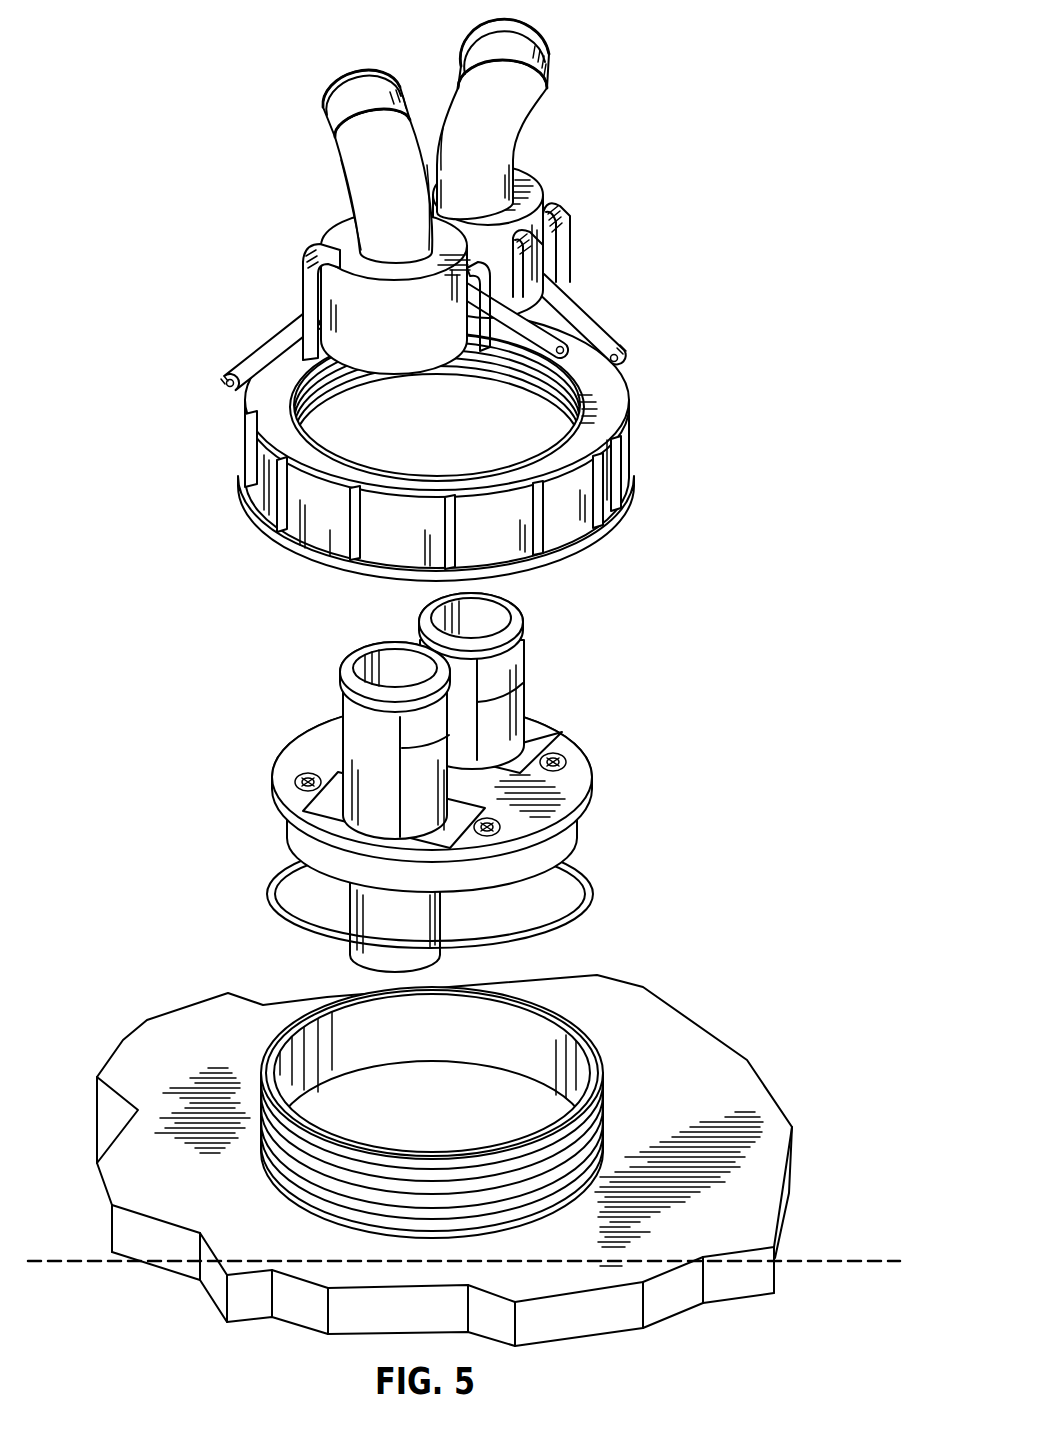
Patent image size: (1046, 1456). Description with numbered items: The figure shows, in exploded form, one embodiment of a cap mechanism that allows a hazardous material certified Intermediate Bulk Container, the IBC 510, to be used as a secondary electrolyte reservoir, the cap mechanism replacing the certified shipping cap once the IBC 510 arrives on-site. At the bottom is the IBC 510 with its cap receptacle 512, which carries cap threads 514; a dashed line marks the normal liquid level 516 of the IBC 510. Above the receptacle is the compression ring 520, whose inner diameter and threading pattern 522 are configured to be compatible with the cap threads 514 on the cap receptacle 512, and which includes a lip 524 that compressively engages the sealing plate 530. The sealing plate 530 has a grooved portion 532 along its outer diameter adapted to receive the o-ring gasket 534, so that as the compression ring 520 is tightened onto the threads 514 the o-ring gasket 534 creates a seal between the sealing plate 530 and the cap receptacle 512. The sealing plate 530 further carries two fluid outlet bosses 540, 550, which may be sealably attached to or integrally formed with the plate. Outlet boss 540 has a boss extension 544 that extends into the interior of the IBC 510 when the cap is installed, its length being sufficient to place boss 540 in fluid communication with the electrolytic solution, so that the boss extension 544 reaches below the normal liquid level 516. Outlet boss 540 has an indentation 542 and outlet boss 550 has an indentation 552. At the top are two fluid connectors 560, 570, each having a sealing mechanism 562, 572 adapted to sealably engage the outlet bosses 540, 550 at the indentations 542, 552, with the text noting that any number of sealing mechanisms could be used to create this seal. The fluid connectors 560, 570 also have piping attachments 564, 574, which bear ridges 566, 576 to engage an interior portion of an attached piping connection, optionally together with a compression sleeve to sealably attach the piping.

The IBC 510 is at (444, 1160).
The cap receptacle 512 is at (467, 1112).
The cap threads 514 is at (614, 1091).
The normal liquid level 516 is at (826, 1274).
The compression ring 520 is at (492, 427).
The threading pattern 522 is at (521, 369).
The lip 524 is at (555, 459).
The sealing plate 530 is at (464, 785).
The grooved portion 532 is at (599, 798).
The o-ring gasket 534 is at (600, 877).
The fluid outlet boss 540 is at (339, 732).
The indentation 542 is at (417, 720).
The boss extension 544 is at (362, 905).
The fluid outlet boss 550 is at (522, 681).
The indentation 552 is at (508, 662).
The fluid connector 560 is at (394, 230).
The sealing mechanism 562 is at (378, 343).
The piping attachment 564 is at (344, 166).
The ridges 566 is at (334, 140).
The fluid connector 570 is at (556, 191).
The sealing mechanism 572 is at (522, 265).
The piping attachment 574 is at (533, 119).
The ridges 576 is at (532, 100).